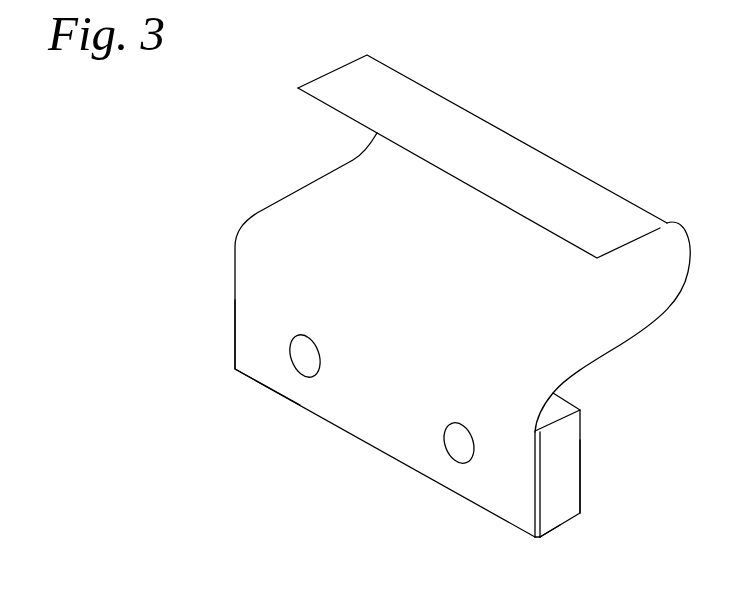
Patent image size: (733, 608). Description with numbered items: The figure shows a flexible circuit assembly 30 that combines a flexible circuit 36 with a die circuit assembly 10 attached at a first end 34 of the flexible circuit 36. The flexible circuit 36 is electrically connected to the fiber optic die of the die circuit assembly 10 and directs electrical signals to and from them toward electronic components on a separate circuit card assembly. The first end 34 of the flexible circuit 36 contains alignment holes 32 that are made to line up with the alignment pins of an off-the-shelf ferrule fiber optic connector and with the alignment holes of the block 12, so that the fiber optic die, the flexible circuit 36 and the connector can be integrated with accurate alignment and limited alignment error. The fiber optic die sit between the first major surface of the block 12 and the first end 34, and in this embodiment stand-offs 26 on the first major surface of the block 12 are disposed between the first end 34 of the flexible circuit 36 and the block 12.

The die circuit assembly 10 is at (580, 450).
The block 12 is at (582, 485).
The stand-offs 26 is at (537, 538).
The flexible circuit assembly 30 is at (588, 153).
The alignment holes 32 is at (453, 457).
The first end 34 is at (260, 355).
The flexible circuit 36 is at (328, 68).